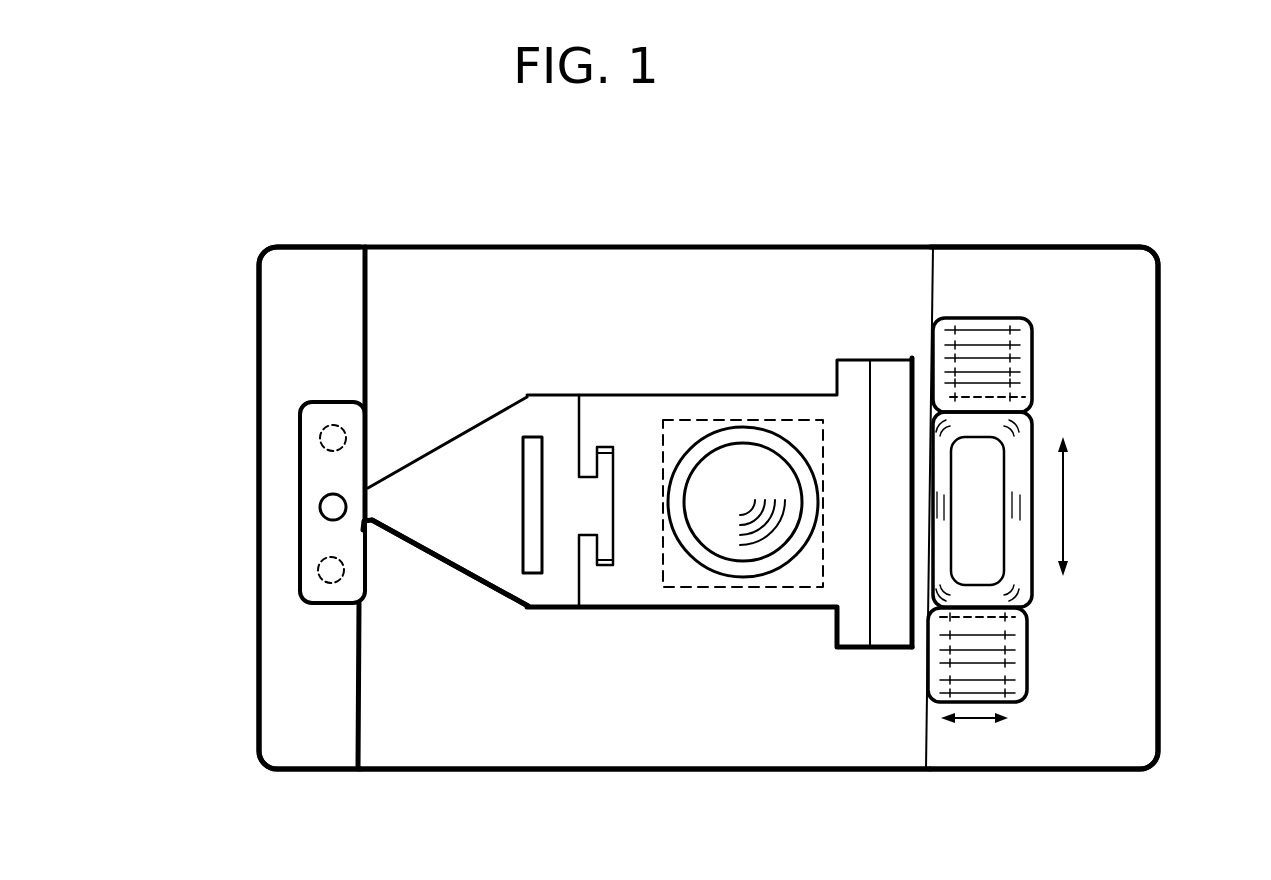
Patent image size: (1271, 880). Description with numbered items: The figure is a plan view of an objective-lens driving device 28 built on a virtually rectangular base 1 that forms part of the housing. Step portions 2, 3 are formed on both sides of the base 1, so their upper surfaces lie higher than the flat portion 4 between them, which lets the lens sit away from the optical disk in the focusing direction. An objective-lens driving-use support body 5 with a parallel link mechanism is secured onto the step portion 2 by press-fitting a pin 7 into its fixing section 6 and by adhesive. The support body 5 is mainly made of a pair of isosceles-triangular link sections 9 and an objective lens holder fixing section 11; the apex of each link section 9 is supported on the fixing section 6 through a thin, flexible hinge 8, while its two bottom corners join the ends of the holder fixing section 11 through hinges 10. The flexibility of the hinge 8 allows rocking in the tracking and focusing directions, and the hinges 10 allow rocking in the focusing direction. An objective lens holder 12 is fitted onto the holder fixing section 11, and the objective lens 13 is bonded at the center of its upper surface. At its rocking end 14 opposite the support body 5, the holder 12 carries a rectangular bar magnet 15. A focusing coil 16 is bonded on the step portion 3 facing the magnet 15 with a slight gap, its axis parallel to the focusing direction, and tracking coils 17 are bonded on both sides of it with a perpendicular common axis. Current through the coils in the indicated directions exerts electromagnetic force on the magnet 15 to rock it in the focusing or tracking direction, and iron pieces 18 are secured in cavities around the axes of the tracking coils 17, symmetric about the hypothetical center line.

The base 1 is at (686, 240).
The step portion 2 is at (307, 745).
The step portion 3 is at (1093, 753).
The flat portion 4 is at (440, 745).
The objective-lens driving-use support body 5 is at (465, 582).
The fixing section 6 is at (303, 583).
The pin 7 is at (320, 503).
The hinge 8 is at (368, 488).
The link section 9 is at (417, 530).
The hinge 10 is at (534, 425).
The objective lens holder fixing section 11 is at (597, 493).
The objective lens holder 12 is at (784, 385).
The objective lens 13 is at (737, 560).
The rocking end 14 is at (845, 650).
The magnet 15 is at (888, 652).
The focusing coil 16 is at (1020, 571).
The tracking coil 17 is at (1018, 340).
The iron piece 18 is at (1032, 397).
The objective-lens driving device 28 is at (486, 224).